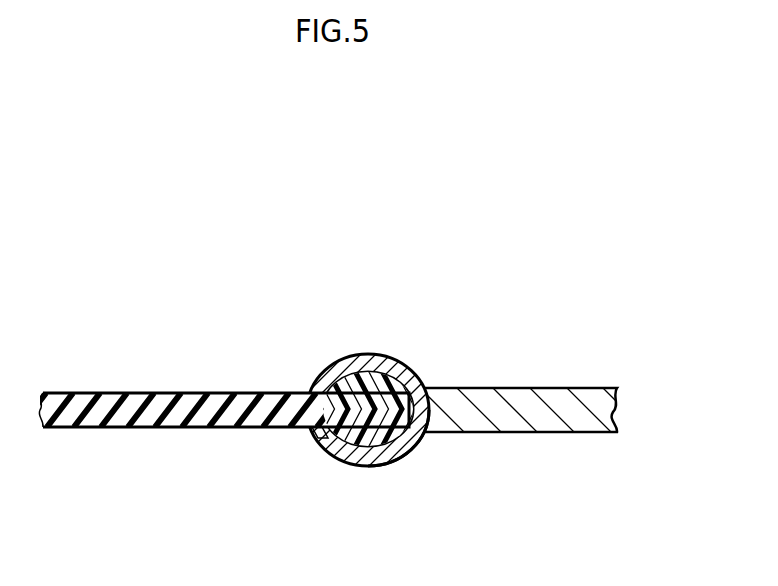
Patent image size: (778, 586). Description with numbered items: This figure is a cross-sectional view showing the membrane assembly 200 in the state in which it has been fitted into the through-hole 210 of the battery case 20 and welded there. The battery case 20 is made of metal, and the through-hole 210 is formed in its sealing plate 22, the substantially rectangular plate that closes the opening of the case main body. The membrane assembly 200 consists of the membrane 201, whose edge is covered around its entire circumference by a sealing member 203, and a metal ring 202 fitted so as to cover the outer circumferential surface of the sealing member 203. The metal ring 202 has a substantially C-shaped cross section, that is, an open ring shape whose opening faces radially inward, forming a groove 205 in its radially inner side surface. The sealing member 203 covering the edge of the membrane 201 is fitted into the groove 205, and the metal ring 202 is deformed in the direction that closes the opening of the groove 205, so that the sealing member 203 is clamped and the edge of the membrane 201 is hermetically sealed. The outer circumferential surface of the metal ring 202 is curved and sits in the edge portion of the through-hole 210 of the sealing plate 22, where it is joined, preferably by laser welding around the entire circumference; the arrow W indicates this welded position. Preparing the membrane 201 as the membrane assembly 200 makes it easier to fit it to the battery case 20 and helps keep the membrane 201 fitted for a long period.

The membrane assembly 200 is at (218, 389).
The membrane 201 is at (132, 393).
The metal ring 202 is at (377, 376).
The sealing member 203 is at (313, 382).
The groove 205 is at (313, 440).
The through-hole 210 is at (432, 380).
The battery case 20 is at (533, 354).
The sealing plate 22 is at (587, 388).
The welded position W is at (428, 440).